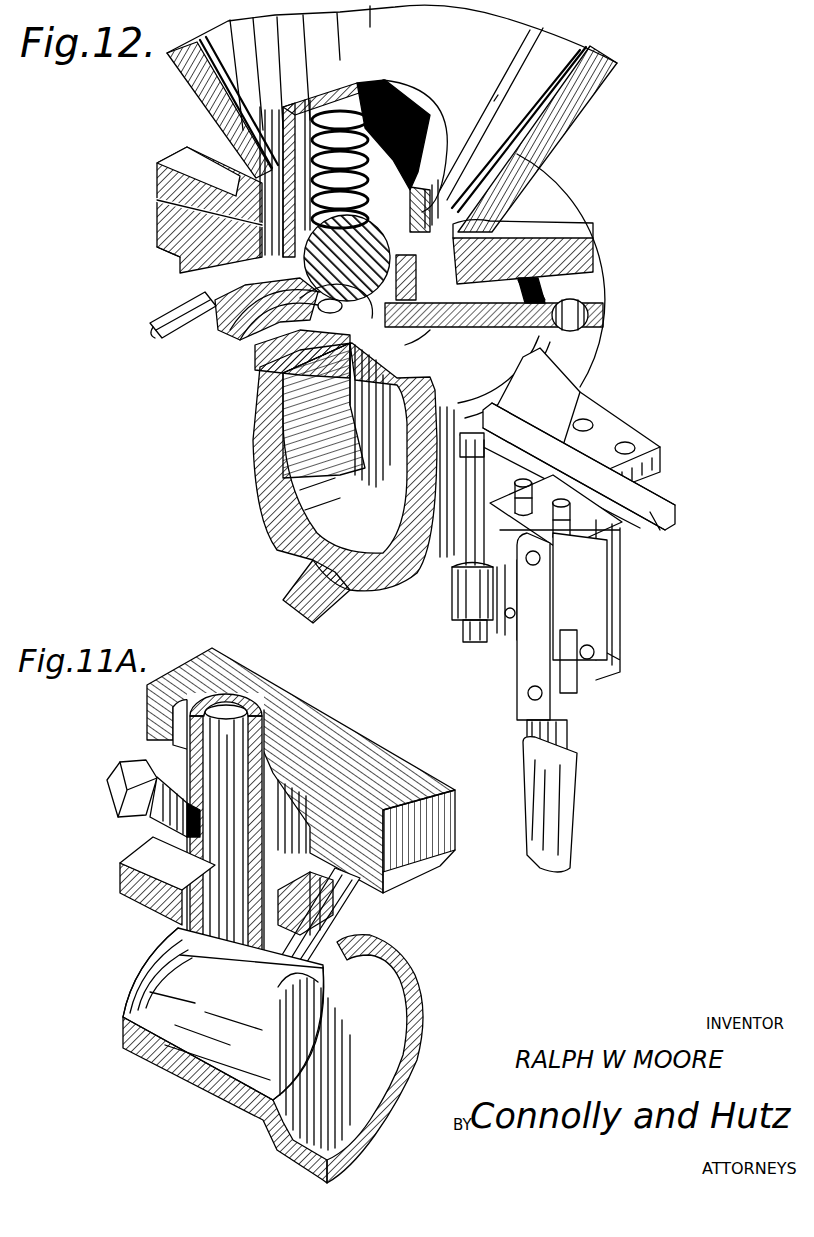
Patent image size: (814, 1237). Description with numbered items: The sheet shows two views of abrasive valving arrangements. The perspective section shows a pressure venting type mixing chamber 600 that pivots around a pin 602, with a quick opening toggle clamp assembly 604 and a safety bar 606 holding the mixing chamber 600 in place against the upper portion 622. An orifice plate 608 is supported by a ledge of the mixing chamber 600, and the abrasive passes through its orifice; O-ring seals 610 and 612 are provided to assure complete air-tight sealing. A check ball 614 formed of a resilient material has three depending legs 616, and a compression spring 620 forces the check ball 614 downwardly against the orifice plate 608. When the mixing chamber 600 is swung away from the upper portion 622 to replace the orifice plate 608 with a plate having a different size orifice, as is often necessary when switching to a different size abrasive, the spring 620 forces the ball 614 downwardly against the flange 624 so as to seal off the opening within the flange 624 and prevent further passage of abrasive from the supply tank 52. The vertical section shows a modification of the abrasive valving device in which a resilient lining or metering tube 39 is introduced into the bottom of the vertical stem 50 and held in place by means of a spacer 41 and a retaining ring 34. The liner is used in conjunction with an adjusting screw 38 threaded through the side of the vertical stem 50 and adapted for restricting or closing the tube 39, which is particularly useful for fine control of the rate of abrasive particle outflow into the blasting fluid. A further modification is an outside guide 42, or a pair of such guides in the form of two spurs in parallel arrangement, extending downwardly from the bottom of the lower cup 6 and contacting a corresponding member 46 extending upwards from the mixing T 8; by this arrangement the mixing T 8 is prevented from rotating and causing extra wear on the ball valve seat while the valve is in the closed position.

In FIG. 12, the supply tank 52 is at (560, 99).
In FIG. 12, the compression spring 620 is at (370, 147).
In FIG. 12, the check ball 614 is at (290, 200).
In FIG. 12, the pin 602 is at (162, 300).
In FIG. 12, the depending legs 616 is at (287, 320).
In FIG. 12, the orifice plate 608 is at (308, 300).
In FIG. 12, the flange 624 is at (282, 345).
In FIG. 12, the O-ring seal 612 is at (527, 277).
In FIG. 12, the O-ring seal 610 is at (485, 343).
In FIG. 12, the upper portion 622 is at (592, 362).
In FIG. 12, the mixing chamber 600 is at (310, 468).
In FIG. 12, the safety bar 606 is at (660, 510).
In FIG. 12, the quick opening toggle clamp assembly 604 is at (600, 673).
In FIG. 11A, the lower cup 6 is at (457, 800).
In FIG. 11A, the spacer 41 is at (192, 740).
In FIG. 11A, the adjusting screw 38 is at (117, 782).
In FIG. 11A, the resilient lining or metering tube 39 is at (153, 838).
In FIG. 11A, the vertical stem 50 is at (140, 905).
In FIG. 11A, the outside guide 42 is at (343, 907).
In FIG. 11A, the retaining ring 34 is at (170, 952).
In FIG. 11A, the corresponding member 46 is at (297, 980).
In FIG. 11A, the mixing T 8 is at (230, 1103).